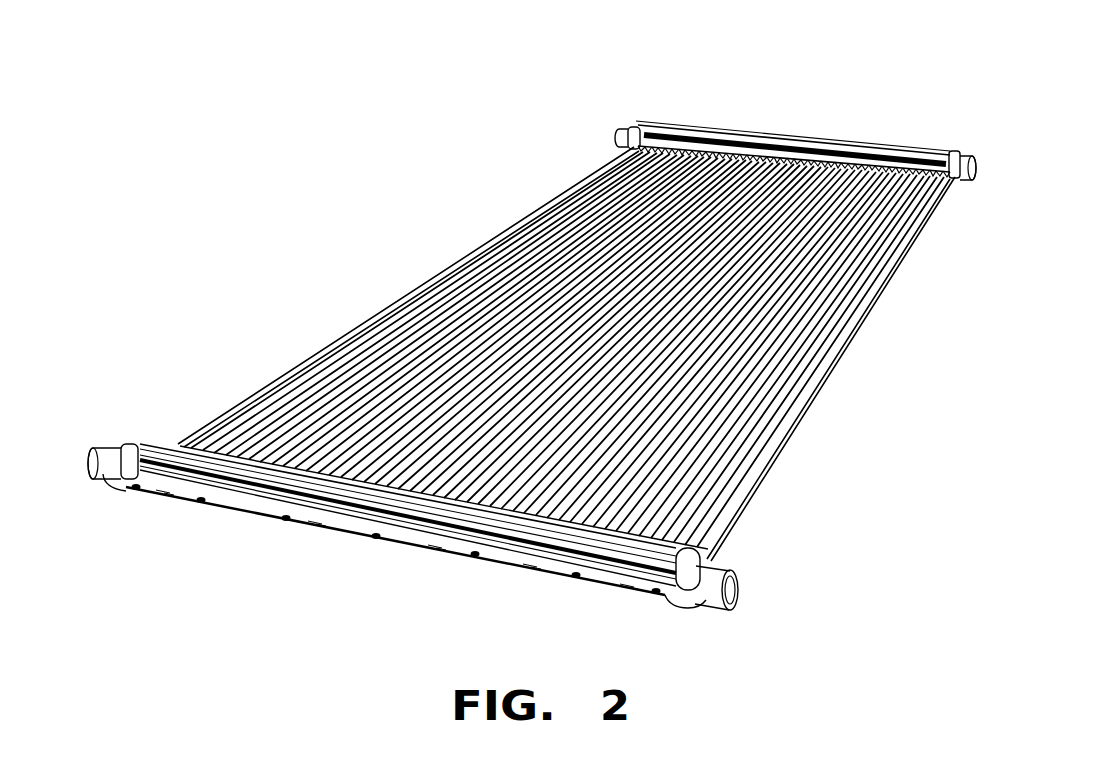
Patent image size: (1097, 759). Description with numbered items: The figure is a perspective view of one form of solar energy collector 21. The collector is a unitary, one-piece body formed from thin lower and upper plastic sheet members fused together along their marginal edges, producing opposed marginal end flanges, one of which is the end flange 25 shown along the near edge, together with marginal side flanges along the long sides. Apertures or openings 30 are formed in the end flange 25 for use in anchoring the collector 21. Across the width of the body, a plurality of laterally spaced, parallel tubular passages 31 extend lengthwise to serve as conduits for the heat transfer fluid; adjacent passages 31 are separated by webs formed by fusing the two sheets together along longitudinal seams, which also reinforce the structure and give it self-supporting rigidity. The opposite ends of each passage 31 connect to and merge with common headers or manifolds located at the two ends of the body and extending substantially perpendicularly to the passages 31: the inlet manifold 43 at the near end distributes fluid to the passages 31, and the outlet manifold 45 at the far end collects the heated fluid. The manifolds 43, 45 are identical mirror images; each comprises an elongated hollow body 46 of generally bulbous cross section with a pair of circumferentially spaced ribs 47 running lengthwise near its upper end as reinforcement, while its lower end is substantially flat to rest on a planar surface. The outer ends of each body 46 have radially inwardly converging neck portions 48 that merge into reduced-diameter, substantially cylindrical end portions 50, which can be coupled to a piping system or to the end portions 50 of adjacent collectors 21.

The solar energy collector 21 is at (420, 262).
The marginal end flange 25 is at (582, 571).
The apertures or openings 30 is at (178, 496).
The tubular passages 31 is at (845, 161).
The inlet manifold 43 is at (500, 546).
The outlet manifold 45 is at (631, 108).
The hollow body 46 is at (692, 130).
The ribs 47 is at (762, 127).
The neck portions 48 is at (946, 144).
The end portions 50 is at (611, 127).